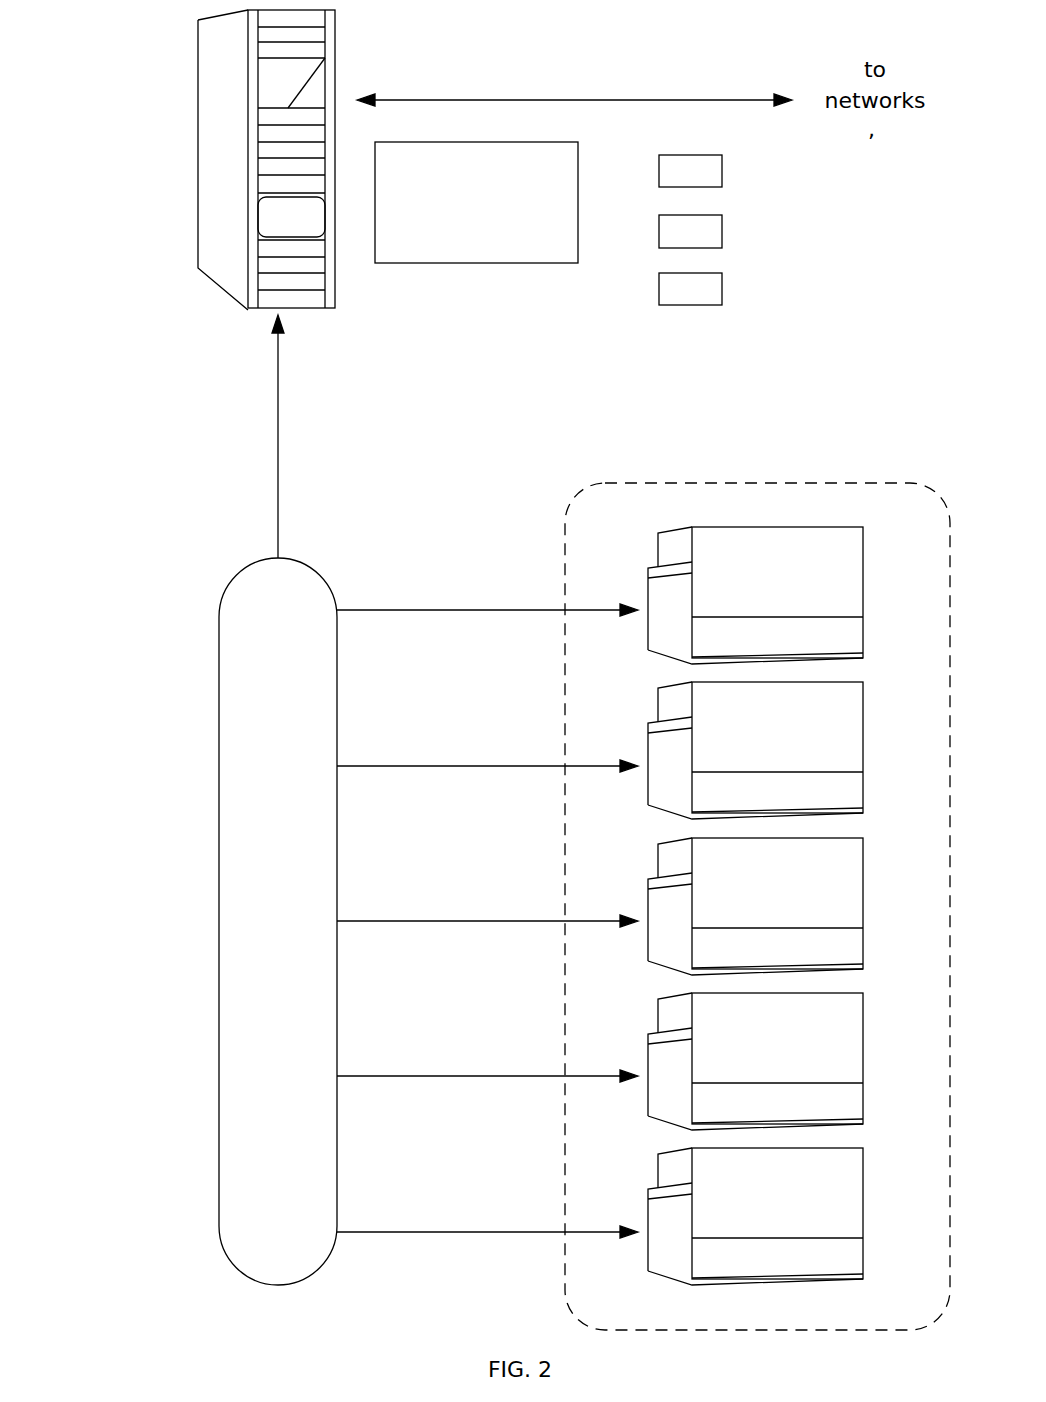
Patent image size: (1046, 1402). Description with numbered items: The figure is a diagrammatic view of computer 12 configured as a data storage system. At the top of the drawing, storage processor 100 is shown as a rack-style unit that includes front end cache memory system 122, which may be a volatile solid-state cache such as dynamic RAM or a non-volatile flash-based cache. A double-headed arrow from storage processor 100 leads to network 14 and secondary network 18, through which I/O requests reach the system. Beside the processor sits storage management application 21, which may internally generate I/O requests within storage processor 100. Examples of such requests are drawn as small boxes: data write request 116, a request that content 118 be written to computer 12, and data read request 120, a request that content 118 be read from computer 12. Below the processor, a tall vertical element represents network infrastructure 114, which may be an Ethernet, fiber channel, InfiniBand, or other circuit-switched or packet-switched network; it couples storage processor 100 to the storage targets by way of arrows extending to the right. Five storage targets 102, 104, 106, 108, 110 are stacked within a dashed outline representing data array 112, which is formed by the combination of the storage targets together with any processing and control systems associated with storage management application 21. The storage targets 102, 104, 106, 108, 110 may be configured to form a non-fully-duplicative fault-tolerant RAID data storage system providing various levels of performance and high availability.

The computer 12 is at (83, 57).
The storage processor 100 is at (228, 160).
The front end cache memory system 122 is at (276, 234).
The storage management application 21 is at (537, 263).
The data write request 116 is at (659, 172).
The content 118 is at (659, 235).
The data read request 120 is at (659, 294).
The network 14 is at (868, 141).
The secondary network 18 is at (912, 141).
The network infrastructure 114 is at (258, 937).
The data array 112 is at (560, 550).
The storage target 102 is at (870, 570).
The storage target 104 is at (870, 725).
The storage target 106 is at (870, 880).
The storage target 108 is at (870, 1036).
The storage target 110 is at (870, 1191).